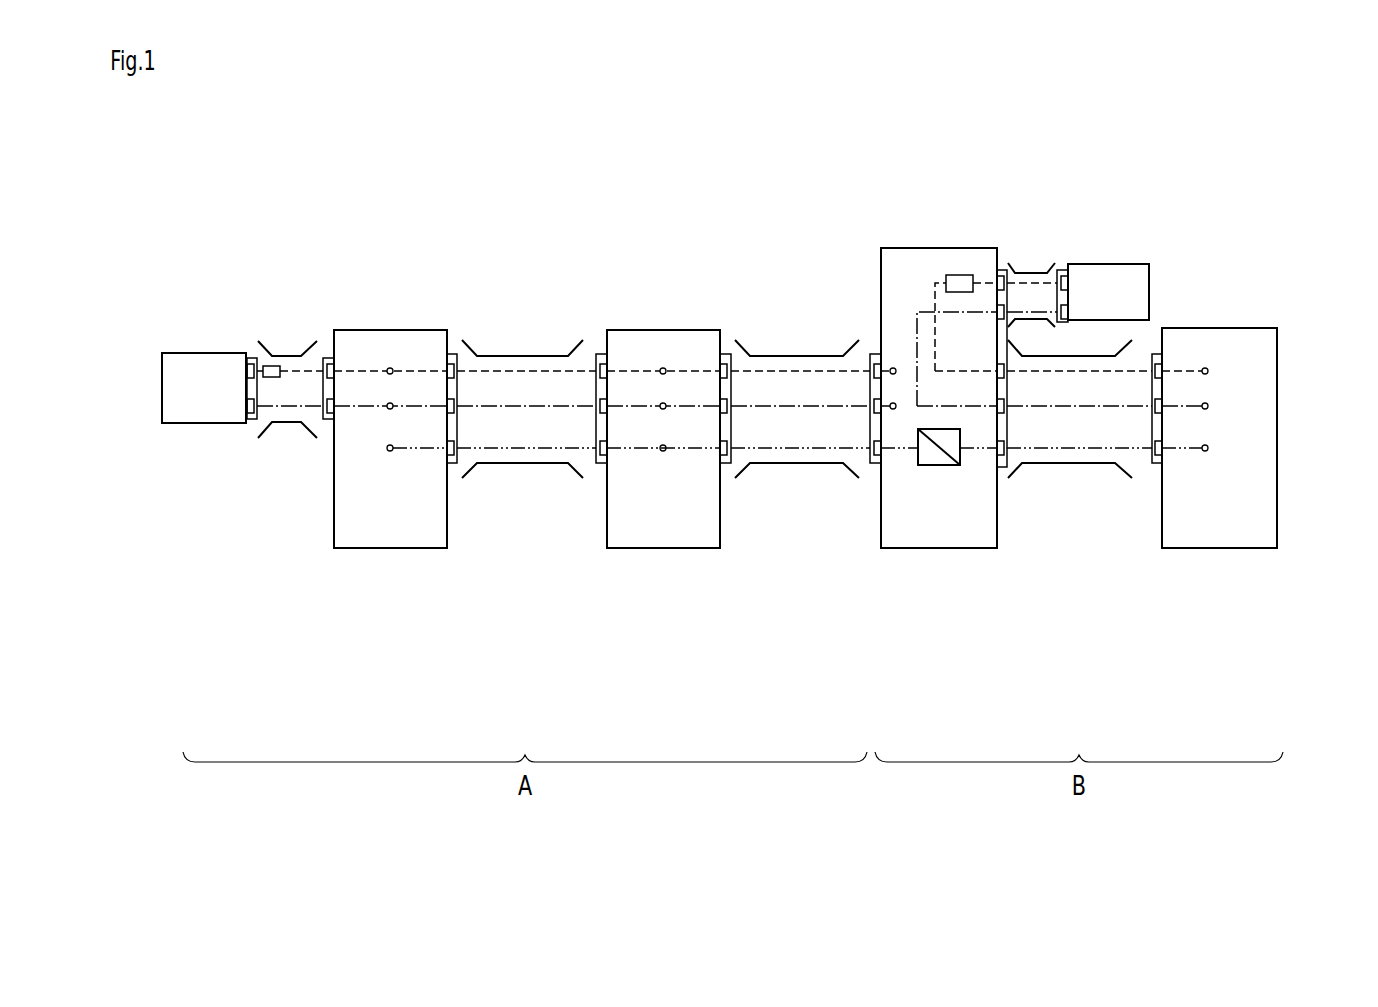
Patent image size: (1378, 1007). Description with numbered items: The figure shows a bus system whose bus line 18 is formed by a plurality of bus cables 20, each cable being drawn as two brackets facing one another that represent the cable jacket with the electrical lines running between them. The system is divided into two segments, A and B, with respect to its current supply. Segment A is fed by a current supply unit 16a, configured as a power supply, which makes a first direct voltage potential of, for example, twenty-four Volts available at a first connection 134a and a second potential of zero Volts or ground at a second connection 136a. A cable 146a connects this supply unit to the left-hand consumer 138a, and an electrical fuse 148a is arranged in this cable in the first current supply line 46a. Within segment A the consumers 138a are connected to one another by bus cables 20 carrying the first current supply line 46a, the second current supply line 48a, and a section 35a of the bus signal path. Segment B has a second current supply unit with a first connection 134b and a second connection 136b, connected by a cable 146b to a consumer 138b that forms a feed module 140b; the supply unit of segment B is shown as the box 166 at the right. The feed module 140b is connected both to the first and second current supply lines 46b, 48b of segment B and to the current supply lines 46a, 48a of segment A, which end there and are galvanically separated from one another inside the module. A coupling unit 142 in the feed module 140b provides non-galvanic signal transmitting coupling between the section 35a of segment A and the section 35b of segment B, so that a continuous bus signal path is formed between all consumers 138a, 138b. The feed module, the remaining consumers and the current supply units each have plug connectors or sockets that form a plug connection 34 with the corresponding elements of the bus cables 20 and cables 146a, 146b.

The current supply unit 16a is at (187, 353).
The first connection 134a is at (248, 358).
The second connection 136a is at (248, 421).
The cable 146a is at (282, 356).
The electrical fuse 148a is at (270, 378).
The first current supply line 46a is at (792, 368).
The second current supply line 48a is at (813, 403).
The bus line 18 is at (788, 426).
The bus cable 20 is at (1101, 598).
The plug connection 34 is at (1023, 510).
The consumer 138a is at (623, 598).
The section of the bus signal path 35a is at (895, 598).
The section of the bus signal path 35b is at (1185, 598).
The feed module 140b is at (882, 518).
The consumer 138b is at (1265, 598).
The coupling unit 142 is at (950, 465).
The first current supply line 46b is at (1182, 368).
The second current supply line 48b is at (1182, 405).
The cable 146b is at (1013, 268).
The first connection 134b is at (1063, 270).
The second connection 136b is at (1068, 310).
The further device 166 is at (1150, 265).